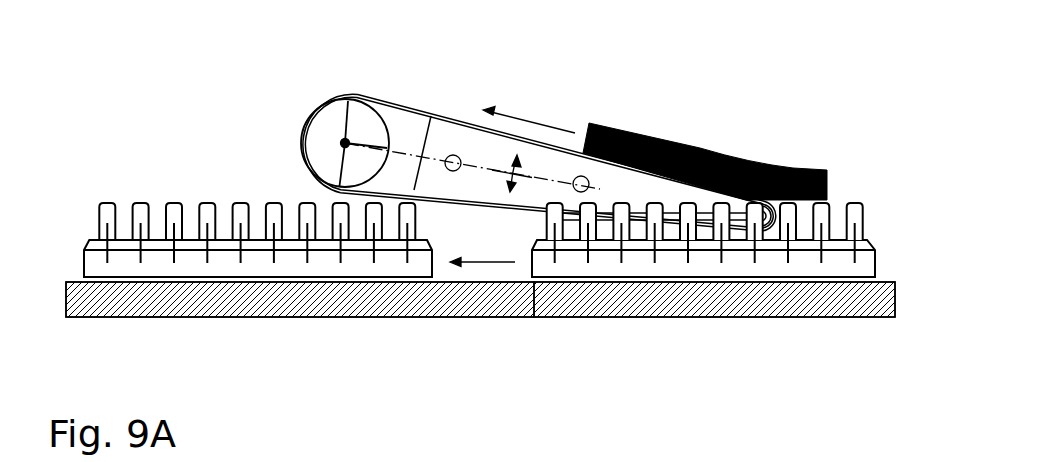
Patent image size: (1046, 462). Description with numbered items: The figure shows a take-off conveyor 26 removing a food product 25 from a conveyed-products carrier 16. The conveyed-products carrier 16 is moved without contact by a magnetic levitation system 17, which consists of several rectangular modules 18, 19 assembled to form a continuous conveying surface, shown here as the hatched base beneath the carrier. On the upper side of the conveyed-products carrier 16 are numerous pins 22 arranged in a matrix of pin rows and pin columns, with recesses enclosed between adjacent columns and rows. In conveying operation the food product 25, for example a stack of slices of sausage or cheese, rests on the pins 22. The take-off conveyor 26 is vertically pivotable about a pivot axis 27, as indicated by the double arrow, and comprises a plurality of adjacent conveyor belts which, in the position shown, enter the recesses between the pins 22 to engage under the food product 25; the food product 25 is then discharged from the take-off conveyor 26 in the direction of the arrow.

The conveyed-products carrier 16 is at (733, 195).
The magnetic levitation system 17 is at (511, 327).
The rectangular module 18 is at (365, 298).
The rectangular module 19 is at (678, 298).
The pin 22 is at (866, 216).
The food product 25 is at (686, 146).
The take-off conveyor 26 is at (505, 118).
The pivot axis 27 is at (340, 142).